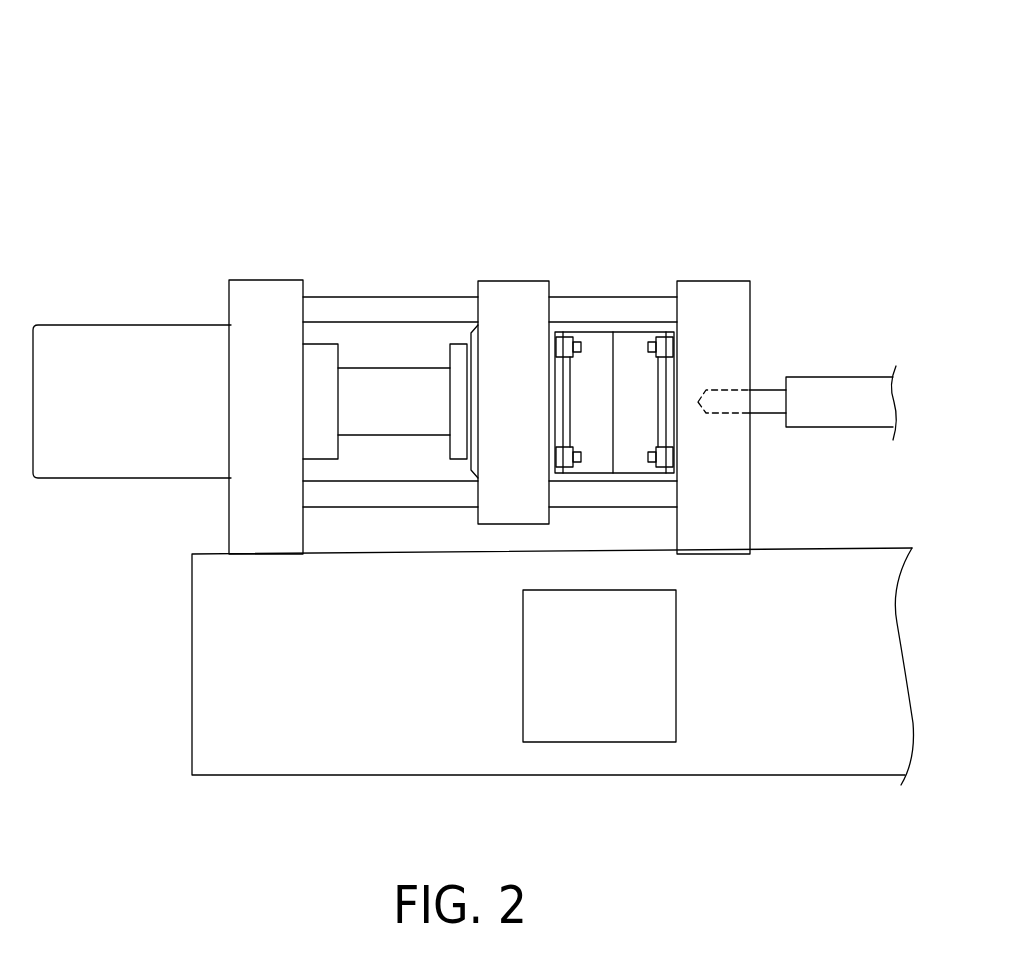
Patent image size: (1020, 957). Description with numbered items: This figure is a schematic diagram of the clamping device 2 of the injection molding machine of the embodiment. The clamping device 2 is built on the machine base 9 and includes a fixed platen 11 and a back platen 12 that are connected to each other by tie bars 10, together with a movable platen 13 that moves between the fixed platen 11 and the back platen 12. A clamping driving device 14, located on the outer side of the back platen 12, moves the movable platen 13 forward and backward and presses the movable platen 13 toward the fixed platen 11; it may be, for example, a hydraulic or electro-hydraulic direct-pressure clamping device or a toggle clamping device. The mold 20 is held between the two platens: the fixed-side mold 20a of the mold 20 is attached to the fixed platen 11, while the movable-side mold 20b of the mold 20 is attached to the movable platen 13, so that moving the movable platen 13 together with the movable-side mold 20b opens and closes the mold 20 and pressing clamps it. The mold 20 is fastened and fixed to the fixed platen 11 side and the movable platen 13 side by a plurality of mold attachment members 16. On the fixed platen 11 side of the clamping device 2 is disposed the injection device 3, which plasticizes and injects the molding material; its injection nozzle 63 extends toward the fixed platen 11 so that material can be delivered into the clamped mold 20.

The clamping device 2 is at (577, 87).
The injection device 3 is at (858, 385).
The machine base 9 is at (200, 641).
The tie bars 10 is at (358, 312).
The fixed platen 11 is at (741, 321).
The back platen 12 is at (258, 288).
The movable platen 13 is at (497, 290).
The clamping driving device 14 is at (102, 327).
The mold attachment members 16 is at (668, 347).
The mold 20 is at (718, 193).
The fixed-side mold 20a is at (633, 345).
The movable-side mold 20b is at (595, 345).
The injection nozzle 63 is at (765, 398).